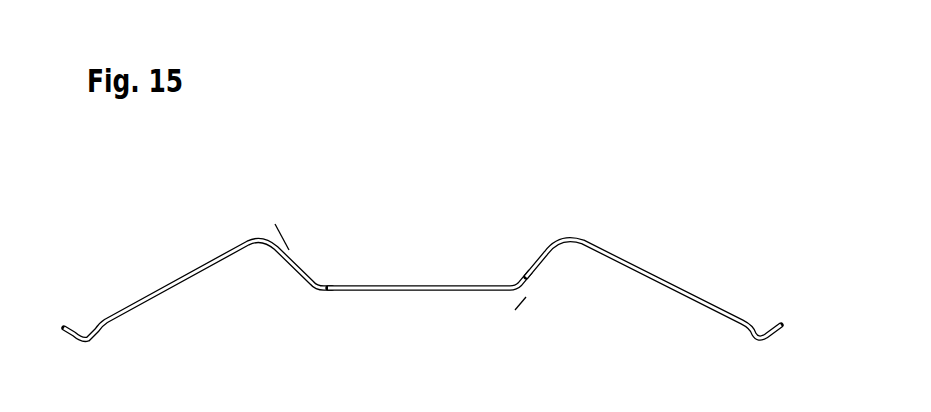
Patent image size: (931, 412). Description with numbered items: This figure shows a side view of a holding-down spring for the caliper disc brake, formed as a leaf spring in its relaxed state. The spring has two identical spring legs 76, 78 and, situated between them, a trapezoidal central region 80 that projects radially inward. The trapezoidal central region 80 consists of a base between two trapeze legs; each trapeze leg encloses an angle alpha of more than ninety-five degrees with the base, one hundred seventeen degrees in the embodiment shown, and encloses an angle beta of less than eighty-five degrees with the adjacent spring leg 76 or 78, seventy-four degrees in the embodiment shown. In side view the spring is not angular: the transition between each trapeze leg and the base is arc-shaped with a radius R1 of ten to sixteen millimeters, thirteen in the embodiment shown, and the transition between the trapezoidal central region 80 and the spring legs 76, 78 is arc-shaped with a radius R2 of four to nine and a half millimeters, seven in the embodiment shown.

The spring leg 76 is at (202, 260).
The spring leg 78 is at (670, 280).
The trapezoidal central region 80 is at (425, 291).
The radius R1 is at (527, 273).
The radius R2 is at (274, 245).